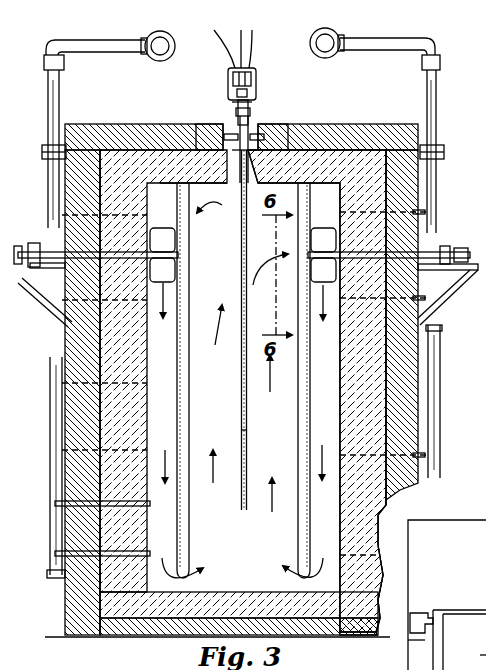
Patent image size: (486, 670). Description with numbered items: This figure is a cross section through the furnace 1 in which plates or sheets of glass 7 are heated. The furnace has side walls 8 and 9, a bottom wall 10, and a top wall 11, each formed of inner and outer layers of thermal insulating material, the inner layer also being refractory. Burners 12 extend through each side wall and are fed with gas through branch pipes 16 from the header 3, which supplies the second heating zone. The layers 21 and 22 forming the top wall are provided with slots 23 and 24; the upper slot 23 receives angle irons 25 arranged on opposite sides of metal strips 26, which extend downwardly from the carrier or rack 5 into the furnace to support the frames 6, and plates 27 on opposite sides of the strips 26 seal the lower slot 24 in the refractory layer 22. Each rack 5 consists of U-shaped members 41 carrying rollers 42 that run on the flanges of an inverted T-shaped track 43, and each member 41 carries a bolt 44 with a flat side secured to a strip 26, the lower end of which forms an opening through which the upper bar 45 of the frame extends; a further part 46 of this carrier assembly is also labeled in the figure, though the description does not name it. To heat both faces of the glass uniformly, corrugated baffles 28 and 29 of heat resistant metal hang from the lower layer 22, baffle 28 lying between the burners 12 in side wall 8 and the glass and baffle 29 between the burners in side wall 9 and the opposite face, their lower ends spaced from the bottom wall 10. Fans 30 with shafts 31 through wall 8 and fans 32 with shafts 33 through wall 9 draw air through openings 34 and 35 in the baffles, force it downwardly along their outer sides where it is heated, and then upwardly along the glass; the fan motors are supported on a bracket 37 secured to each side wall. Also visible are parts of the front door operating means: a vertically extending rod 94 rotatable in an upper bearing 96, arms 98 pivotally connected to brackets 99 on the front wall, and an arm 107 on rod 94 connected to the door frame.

The furnace 1 is at (372, 122).
The header 3 is at (155, 60).
The carrier or rack 5 is at (260, 62).
The frame 6 is at (248, 435).
The plates or sheets of glass 7 is at (240, 362).
The side wall 8 is at (78, 348).
The side wall 9 is at (400, 358).
The bottom wall 10 is at (165, 612).
The top wall 11 is at (116, 124).
The burners 12 is at (62, 404).
The branch pipes 16 is at (50, 176).
The upper layer of top wall 21 is at (158, 133).
The lower refractory layer of top wall 22 is at (152, 160).
The upper slot 23 is at (252, 118).
The lower slot 24 is at (262, 162).
The angle irons 25 is at (230, 134).
The metal strips 26 is at (193, 169).
The plates 27 is at (246, 137).
The corrugated baffle 28 is at (189, 424).
The corrugated baffle 29 is at (298, 418).
The fans 30 is at (172, 272).
The shaft 31 is at (46, 252).
The fans 32 is at (323, 228).
The shaft 33 is at (442, 250).
The opening 34 is at (178, 258).
The opening 35 is at (308, 270).
The bracket 37 is at (462, 308).
The U-shaped members 41 is at (256, 88).
The rollers 42 is at (223, 36).
The inverted T-shaped track 43 is at (227, 34).
The bolt 44 is at (254, 106).
The upper bar of frame 45 is at (238, 168).
The terminal block 46 is at (228, 96).
The vertically extending rod 94 is at (447, 580).
The upper bearing 96 is at (459, 608).
The arms 98 is at (418, 612).
The brackets 99 is at (410, 640).
The arm 107 is at (471, 645).